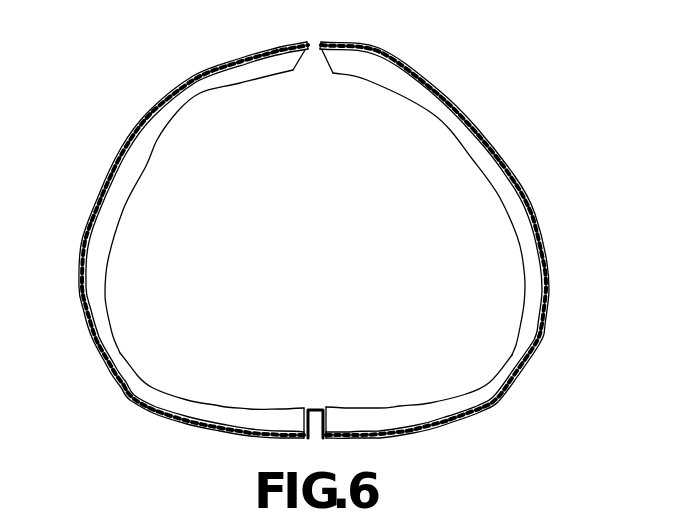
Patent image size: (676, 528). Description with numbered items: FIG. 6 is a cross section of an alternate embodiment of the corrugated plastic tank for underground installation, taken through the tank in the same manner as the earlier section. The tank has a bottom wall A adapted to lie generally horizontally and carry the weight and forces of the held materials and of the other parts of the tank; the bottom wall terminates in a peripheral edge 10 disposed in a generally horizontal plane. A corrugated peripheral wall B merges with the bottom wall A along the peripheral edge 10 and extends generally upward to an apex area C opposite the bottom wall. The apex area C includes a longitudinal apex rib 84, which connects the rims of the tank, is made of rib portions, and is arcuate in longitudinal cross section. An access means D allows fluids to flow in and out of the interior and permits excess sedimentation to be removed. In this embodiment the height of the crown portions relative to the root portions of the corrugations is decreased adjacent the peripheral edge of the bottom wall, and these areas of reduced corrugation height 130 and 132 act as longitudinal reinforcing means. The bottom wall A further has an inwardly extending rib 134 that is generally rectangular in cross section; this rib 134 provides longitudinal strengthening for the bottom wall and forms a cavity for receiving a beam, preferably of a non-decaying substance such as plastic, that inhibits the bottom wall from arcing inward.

The peripheral edge 10 is at (123, 395).
The longitudinal apex rib 84 is at (317, 62).
The area of reduced corrugation height 130 is at (128, 352).
The area of reduced corrugation height 132 is at (506, 353).
The inwardly extending rib 134 is at (316, 441).
The bottom wall A is at (527, 147).
The peripheral wall B is at (190, 70).
The apex area C is at (324, 40).
The access means D is at (255, 446).